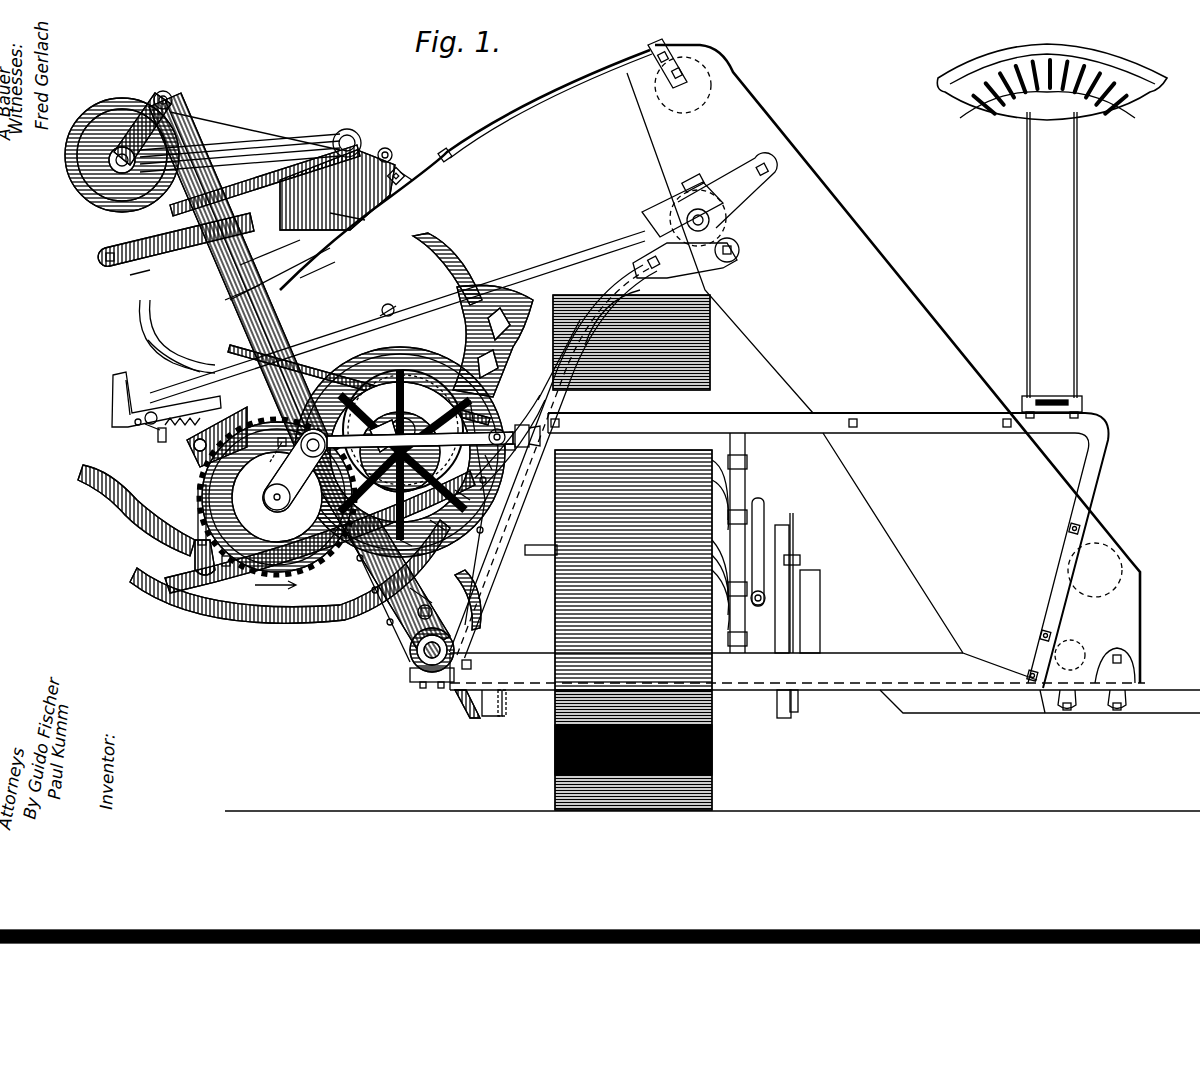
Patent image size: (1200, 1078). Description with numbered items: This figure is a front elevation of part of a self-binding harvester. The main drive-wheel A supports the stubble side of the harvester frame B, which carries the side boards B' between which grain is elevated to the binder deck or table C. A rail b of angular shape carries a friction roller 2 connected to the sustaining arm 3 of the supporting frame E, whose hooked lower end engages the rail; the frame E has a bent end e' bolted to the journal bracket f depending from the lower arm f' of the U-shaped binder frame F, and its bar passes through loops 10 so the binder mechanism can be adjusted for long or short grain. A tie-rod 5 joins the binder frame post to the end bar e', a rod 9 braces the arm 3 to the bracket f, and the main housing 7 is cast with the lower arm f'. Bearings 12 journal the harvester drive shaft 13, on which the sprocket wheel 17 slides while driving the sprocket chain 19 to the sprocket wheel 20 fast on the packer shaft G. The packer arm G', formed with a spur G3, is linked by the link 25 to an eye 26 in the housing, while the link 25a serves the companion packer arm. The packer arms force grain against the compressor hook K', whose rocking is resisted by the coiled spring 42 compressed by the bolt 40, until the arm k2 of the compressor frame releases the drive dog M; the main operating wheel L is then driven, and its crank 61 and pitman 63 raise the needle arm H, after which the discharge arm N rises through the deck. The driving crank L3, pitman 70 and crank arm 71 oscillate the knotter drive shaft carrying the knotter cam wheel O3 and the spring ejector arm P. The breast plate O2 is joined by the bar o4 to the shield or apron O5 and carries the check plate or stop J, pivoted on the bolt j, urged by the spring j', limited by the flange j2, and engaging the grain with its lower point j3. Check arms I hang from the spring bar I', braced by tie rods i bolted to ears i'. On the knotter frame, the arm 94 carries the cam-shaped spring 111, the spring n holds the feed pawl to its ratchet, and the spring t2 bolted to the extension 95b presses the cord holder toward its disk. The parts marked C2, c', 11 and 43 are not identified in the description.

The main drive-wheel A is at (672, 552).
The harvester frame B is at (825, 461).
The side boards B' is at (913, 376).
The binder deck or table C is at (482, 282).
The rod bracket C2 is at (385, 312).
The supporting frame E is at (505, 428).
The binder frame F is at (130, 250).
The packer shaft G is at (485, 341).
The packer arm G' is at (447, 266).
The spur G3 is at (556, 310).
The needle arm H is at (510, 395).
The check springs or arms I is at (299, 373).
The spring bar I' is at (265, 167).
The check plate or stop J is at (318, 248).
The compressor hook K' is at (156, 350).
The main operating wheel L is at (235, 575).
The driving crank L3 is at (295, 470).
The drive dog M is at (400, 355).
The discharge arm N is at (120, 510).
The breast plate O2 is at (362, 218).
The knotter cam wheel O3 is at (112, 125).
The shield or apron O5 is at (522, 112).
The spring ejector arm P is at (345, 230).
The rail b is at (492, 710).
The arm c' is at (420, 440).
The end of supporting frame bar e' is at (494, 477).
The journal bracket f is at (271, 449).
The lower arm of binder frame f' is at (177, 330).
The tie rods i is at (240, 145).
The ears i' is at (143, 118).
The bolt j is at (415, 184).
The spring j' is at (395, 153).
The lug or flange j2 is at (262, 270).
The lower point of check plate j3 is at (330, 265).
The arm of compressor frame k2 is at (300, 345).
The spring n is at (412, 545).
The bar o4 is at (435, 160).
The spring t2 is at (105, 255).
The friction roller 2 is at (465, 690).
The sustaining arm 3 is at (458, 600).
The tie-rod 5 is at (403, 409).
The main housing 7 is at (375, 455).
The brace rod 9 is at (410, 586).
The loops 10 is at (510, 448).
The link 11 is at (470, 500).
The bearings 12 is at (425, 690).
The harvester drive shaft 13 is at (410, 680).
The sprocket wheel 17 is at (392, 662).
The sprocket chain 19 is at (410, 372).
The sprocket wheel 20 is at (443, 528).
The link 25 is at (198, 494).
The link 25a is at (195, 552).
The eye 26 is at (196, 455).
The bolt 40 is at (160, 438).
The coiled spring 42 is at (182, 425).
The pin 43 is at (150, 428).
The crank 61 is at (225, 565).
The pitman 63 is at (385, 305).
The pitman rod or link 70 is at (255, 300).
The crank arm 71 is at (180, 118).
The arm of knotter frame 94 is at (280, 145).
The extension 95b is at (135, 280).
The cam-shaped spring 111 is at (270, 140).